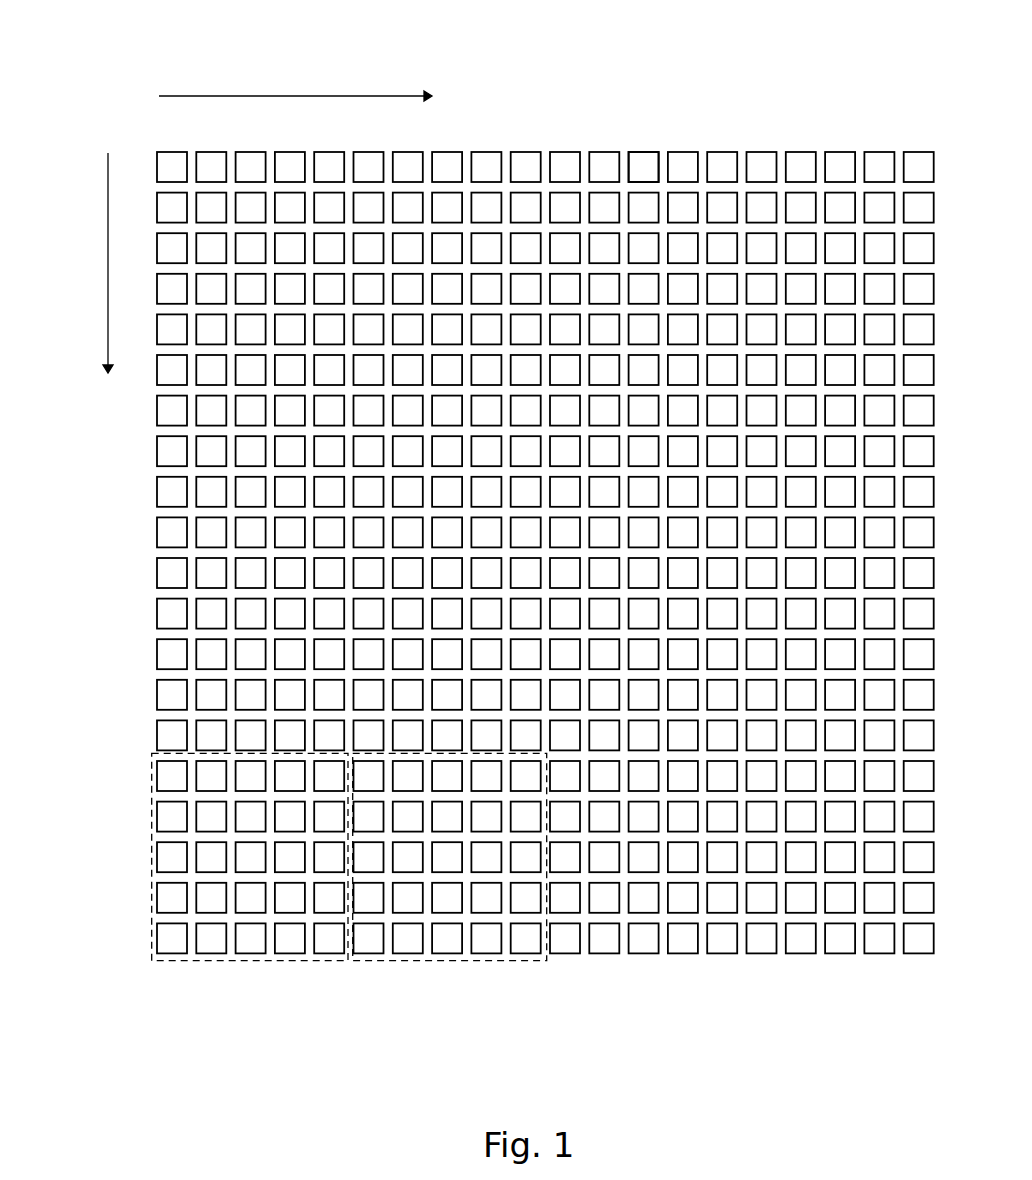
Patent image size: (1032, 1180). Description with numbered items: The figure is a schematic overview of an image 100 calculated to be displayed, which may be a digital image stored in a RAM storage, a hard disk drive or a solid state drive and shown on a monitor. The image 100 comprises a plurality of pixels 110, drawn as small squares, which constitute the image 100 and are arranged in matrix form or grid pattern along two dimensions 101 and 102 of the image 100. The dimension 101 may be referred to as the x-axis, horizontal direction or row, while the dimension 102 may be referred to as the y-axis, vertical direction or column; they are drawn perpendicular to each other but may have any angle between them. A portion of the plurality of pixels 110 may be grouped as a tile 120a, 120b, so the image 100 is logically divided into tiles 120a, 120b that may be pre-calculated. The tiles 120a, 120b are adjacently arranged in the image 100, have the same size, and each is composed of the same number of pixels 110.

The image 100 is at (555, 117).
The dimension 101 is at (287, 96).
The dimension 102 is at (108, 287).
The pixels 110 is at (645, 160).
The tile 120a is at (223, 961).
The tile 120b is at (453, 961).